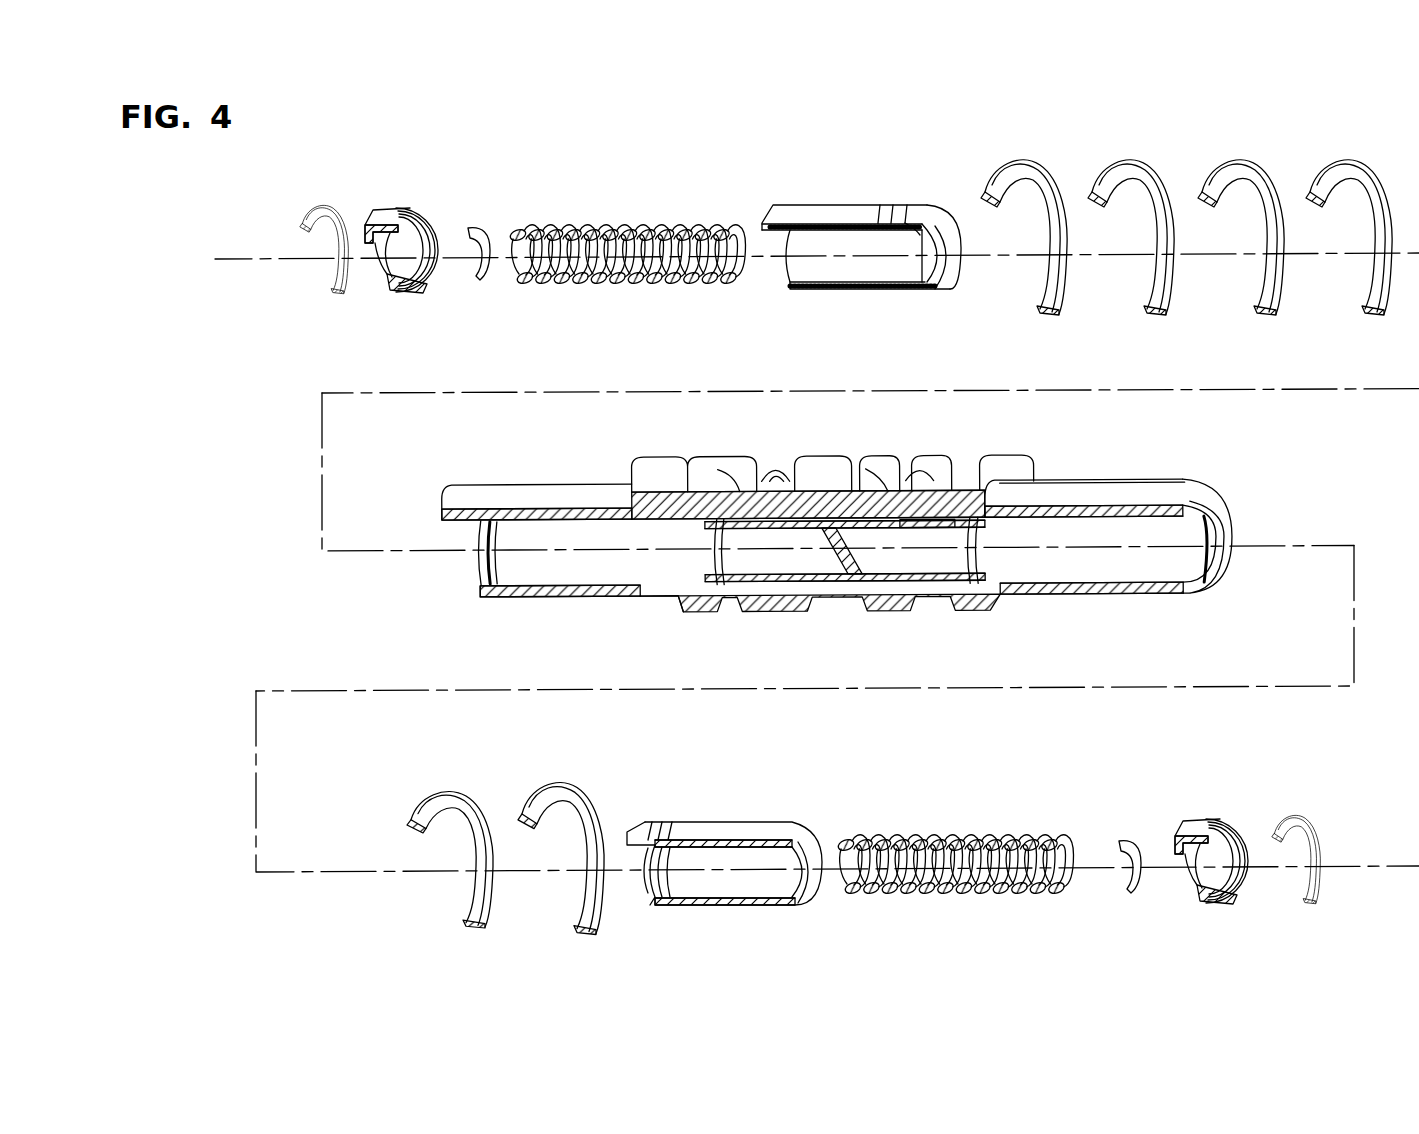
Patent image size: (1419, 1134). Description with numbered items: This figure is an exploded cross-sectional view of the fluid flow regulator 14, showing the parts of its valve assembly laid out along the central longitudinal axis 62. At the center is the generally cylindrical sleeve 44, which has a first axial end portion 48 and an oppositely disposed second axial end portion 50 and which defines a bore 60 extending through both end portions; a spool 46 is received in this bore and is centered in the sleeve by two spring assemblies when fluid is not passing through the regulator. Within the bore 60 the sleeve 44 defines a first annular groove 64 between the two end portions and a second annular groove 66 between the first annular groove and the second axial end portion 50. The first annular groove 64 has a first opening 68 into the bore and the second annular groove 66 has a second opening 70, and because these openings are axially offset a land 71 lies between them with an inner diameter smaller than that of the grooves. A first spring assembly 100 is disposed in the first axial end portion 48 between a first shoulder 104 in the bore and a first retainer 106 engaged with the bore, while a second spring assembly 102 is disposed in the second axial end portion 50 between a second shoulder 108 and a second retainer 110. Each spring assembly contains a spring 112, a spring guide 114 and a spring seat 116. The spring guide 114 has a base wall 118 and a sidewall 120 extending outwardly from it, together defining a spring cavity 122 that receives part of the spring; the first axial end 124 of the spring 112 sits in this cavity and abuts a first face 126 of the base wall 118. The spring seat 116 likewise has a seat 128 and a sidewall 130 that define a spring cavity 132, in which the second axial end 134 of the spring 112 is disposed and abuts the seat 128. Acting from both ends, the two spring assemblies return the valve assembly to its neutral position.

The fluid flow regulator 14 is at (455, 158).
The sleeve 44 is at (661, 454).
The spool 46 is at (772, 584).
The first axial end portion 48 is at (573, 605).
The second axial end portion 50 is at (1178, 470).
The bore 60 is at (1176, 570).
The central longitudinal axis 62 is at (1250, 546).
The first annular groove 64 is at (752, 499).
The second annular groove 66 is at (878, 504).
The first opening 68 is at (720, 528).
The second opening 70 is at (902, 530).
The land 71 is at (818, 531).
The first spring assembly 100 is at (615, 196).
The second spring assembly 102 is at (985, 790).
The first shoulder 104 is at (705, 591).
The first retainer 106 is at (313, 203).
The second shoulder 108 is at (990, 586).
The second retainer 110 is at (1310, 830).
The spring 112 is at (590, 285).
The spring guide 114 is at (840, 212).
The spring seat 116 is at (412, 296).
The base wall 118 is at (936, 217).
The sidewall 120 is at (853, 290).
The spring cavity 122 is at (825, 270).
The first axial end 124 is at (737, 222).
The first face 126 is at (918, 233).
The seat 128 is at (390, 282).
The sidewall 130 is at (392, 211).
The spring cavity 132 is at (423, 236).
The second axial end 134 is at (522, 222).